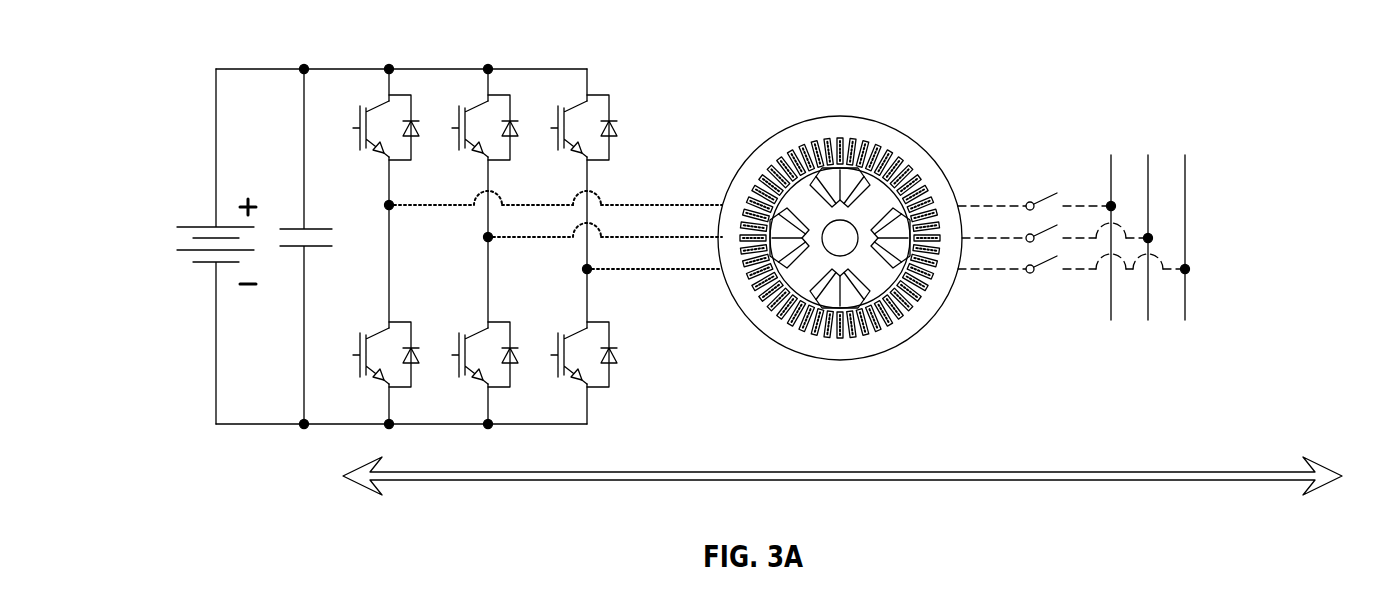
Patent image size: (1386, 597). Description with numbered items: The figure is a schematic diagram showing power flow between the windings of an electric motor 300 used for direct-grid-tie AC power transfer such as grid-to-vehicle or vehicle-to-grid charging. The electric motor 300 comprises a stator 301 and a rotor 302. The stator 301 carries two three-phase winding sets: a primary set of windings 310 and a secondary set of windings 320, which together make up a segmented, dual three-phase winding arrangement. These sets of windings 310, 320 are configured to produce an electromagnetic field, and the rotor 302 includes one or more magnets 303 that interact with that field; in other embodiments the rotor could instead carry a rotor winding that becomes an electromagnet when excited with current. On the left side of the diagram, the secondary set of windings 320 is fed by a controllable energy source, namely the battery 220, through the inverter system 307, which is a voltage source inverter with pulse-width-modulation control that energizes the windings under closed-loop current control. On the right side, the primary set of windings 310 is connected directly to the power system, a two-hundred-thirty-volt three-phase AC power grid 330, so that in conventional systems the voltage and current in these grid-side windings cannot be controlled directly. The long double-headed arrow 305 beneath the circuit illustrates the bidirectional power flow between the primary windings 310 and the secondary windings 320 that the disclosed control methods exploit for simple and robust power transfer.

The battery 220 is at (178, 208).
The inverter system 307 is at (570, 69).
The secondary set of windings 320 is at (748, 192).
The electric motor 300 is at (840, 114).
The stator 301 is at (905, 150).
The rotor 302 is at (841, 235).
The magnets 303 is at (850, 333).
The primary set of windings 310 is at (937, 198).
The AC power grid 330 is at (1203, 227).
The arrow 305 is at (842, 481).